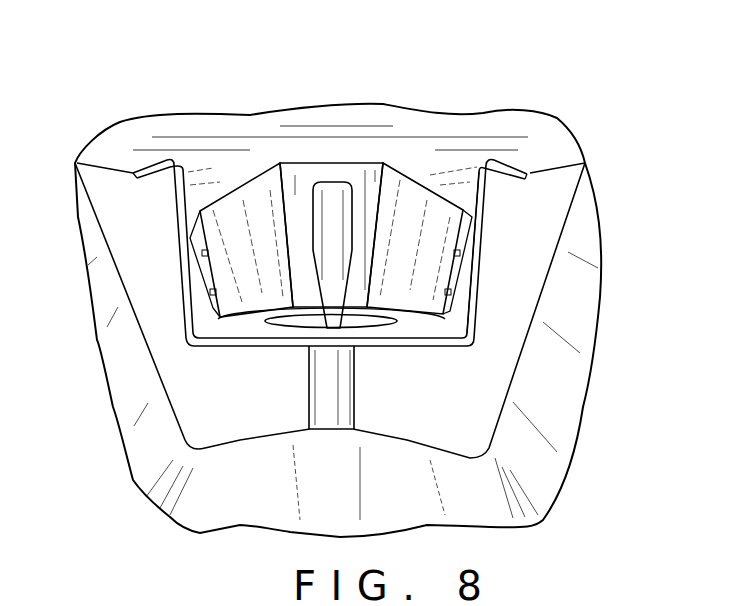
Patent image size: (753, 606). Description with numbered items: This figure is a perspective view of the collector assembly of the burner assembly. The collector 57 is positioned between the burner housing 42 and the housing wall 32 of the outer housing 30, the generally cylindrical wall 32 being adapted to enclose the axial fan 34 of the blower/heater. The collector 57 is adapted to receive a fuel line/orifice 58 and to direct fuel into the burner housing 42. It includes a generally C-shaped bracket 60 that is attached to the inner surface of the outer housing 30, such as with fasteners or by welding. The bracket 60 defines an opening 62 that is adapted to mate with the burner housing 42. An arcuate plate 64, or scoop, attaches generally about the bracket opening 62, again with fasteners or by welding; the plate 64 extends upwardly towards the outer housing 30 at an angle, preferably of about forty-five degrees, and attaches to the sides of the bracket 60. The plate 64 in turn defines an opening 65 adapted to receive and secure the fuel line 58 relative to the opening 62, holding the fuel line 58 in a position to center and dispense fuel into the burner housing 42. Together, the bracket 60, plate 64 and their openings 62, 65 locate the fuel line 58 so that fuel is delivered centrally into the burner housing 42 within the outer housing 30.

The outer housing 30 is at (97, 141).
The cylindrical wall 32 is at (212, 147).
The axial fan 34 is at (123, 363).
The burner housing 42 is at (355, 400).
The collector 57 is at (485, 234).
The fuel line/orifice 58 is at (330, 223).
The C-shaped bracket 60 is at (480, 283).
The bracket opening 62 is at (397, 322).
The arcuate plate 64 is at (411, 175).
The plate opening 65 is at (333, 182).